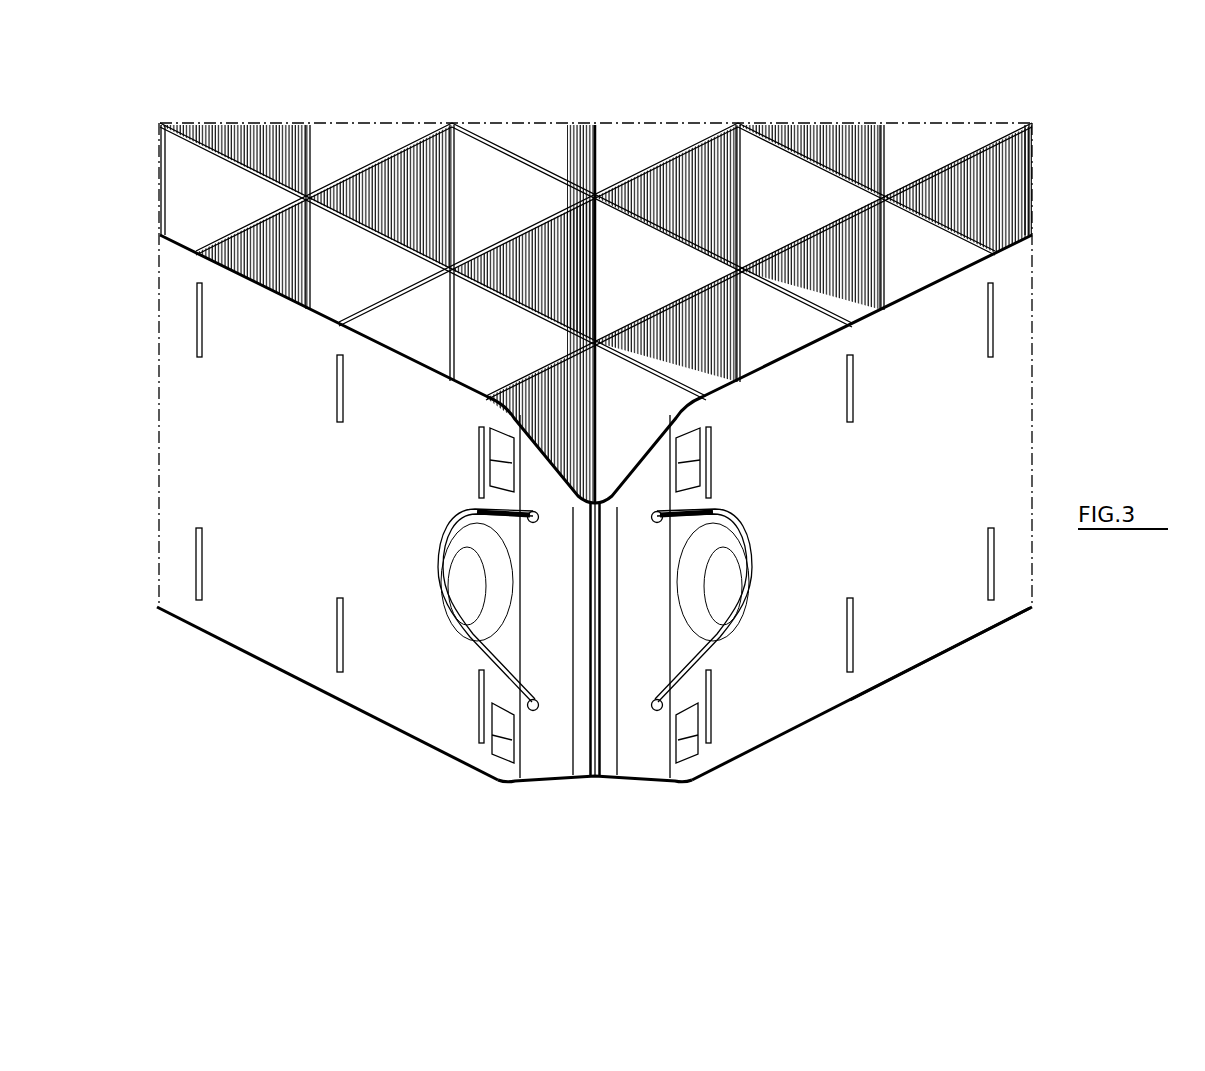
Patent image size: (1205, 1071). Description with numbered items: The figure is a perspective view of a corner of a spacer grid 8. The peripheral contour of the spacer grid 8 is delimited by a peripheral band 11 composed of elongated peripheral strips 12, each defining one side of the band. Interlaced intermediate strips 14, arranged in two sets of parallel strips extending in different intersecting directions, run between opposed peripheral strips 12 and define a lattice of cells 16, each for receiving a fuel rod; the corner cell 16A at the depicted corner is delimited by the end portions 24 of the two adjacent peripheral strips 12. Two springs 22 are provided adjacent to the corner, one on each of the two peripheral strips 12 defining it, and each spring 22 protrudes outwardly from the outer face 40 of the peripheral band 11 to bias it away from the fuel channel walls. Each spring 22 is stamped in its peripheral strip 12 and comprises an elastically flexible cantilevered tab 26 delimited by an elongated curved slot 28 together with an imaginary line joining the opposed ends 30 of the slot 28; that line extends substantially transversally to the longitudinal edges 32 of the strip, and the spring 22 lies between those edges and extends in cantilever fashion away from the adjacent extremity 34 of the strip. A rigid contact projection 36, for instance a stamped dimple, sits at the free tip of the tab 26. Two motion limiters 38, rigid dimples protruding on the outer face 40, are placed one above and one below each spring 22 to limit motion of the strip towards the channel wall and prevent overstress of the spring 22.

The spacer grid 8 is at (249, 118).
The peripheral band 11 is at (872, 754).
The peripheral strip 12 is at (268, 637).
The intermediate strip 14 is at (493, 243).
The cell 16 is at (750, 160).
The corner cell 16A is at (573, 405).
The spring 22 is at (408, 552).
The end portion 24 is at (465, 767).
The cantilevered tab 26 is at (462, 512).
The slot 28 is at (450, 642).
The end of slot 30 is at (536, 524).
The longitudinal edge 32 is at (186, 242).
The extremity 34 is at (578, 765).
The contact projection 36 is at (460, 587).
The motion limiter 38 is at (497, 450).
The outer face 40 is at (308, 663).